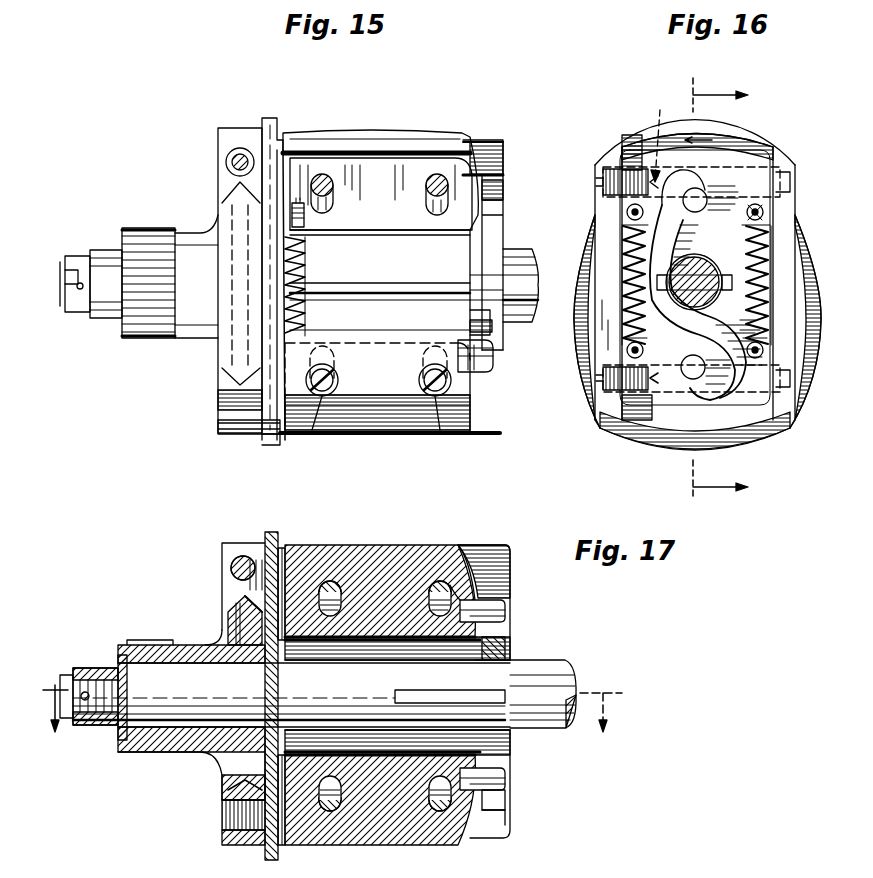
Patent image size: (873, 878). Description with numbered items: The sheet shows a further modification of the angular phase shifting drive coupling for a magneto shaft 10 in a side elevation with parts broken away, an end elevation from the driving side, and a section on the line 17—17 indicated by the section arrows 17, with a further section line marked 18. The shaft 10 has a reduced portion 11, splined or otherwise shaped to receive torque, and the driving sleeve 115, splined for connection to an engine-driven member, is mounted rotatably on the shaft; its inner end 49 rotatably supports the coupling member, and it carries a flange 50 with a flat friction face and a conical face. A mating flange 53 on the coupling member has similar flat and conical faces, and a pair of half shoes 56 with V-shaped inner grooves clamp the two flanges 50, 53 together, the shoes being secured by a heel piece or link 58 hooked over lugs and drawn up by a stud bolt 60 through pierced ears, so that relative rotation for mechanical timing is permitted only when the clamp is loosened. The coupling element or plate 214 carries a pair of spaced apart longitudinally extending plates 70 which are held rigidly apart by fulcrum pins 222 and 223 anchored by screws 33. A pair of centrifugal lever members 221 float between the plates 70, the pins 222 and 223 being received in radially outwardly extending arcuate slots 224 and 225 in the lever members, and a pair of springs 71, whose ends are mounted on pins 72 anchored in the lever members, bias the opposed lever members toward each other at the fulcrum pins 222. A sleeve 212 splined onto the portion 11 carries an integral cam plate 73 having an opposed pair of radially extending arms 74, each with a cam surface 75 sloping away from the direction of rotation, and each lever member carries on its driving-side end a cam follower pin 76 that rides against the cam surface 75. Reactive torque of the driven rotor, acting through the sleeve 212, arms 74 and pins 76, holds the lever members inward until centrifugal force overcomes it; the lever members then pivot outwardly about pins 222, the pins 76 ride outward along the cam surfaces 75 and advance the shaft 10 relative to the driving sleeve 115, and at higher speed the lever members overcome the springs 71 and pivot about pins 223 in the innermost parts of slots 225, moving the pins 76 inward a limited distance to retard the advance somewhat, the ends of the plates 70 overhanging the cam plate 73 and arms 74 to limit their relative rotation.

In FIG. 15, the shaft 10 is at (512, 250).
In FIG. 17, the shaft 10 is at (545, 668).
In FIG. 16, the reduced portion 11 is at (690, 305).
In FIG. 17, the reduced portion 11 is at (291, 693).
In FIG. 16, the bearing sleeve 17 is at (723, 291).
In FIG. 17, the thrust washer 18 is at (333, 720).
In FIG. 15, the screws 33 is at (308, 433).
In FIG. 16, the screws 33 is at (591, 176).
In FIG. 17, the inner end 49 is at (228, 768).
In FIG. 17, the flange 50 is at (232, 636).
In FIG. 17, the flange 53 is at (232, 600).
In FIG. 15, the half shoes 56 is at (218, 398).
In FIG. 17, the half shoes 56 is at (222, 815).
In FIG. 15, the heel piece or link 58 is at (240, 430).
In FIG. 17, the heel piece or link 58 is at (222, 840).
In FIG. 15, the stud bolt 60 is at (226, 150).
In FIG. 17, the stud bolt 60 is at (230, 562).
In FIG. 15, the plates 70 is at (486, 142).
In FIG. 16, the plates 70 is at (605, 410).
In FIG. 17, the plates 70 is at (490, 548).
In FIG. 15, the springs 71 is at (308, 250).
In FIG. 16, the springs 71 is at (625, 230).
In FIG. 15, the pins 72 is at (308, 222).
In FIG. 16, the pins 72 is at (625, 200).
In FIG. 15, the cam plate 73 is at (486, 282).
In FIG. 16, the cam plate 73 is at (725, 318).
In FIG. 17, the cam plate 73 is at (505, 645).
In FIG. 15, the arms 74 is at (500, 170).
In FIG. 16, the arms 74 is at (765, 358).
In FIG. 17, the arms 74 is at (518, 799).
In FIG. 16, the cam surface 75 is at (700, 190).
In FIG. 17, the cam surface 75 is at (505, 805).
In FIG. 15, the cam follower 76 is at (495, 358).
In FIG. 16, the cam follower 76 is at (705, 205).
In FIG. 17, the cam follower 76 is at (505, 612).
In FIG. 15, the sleeve 115 is at (185, 338).
In FIG. 17, the sleeve 115 is at (148, 752).
In FIG. 15, the sleeve 212 is at (380, 280).
In FIG. 17, the sleeve 212 is at (505, 742).
In FIG. 15, the coupling element or plate 214 is at (268, 118).
In FIG. 16, the coupling element or plate 214 is at (735, 140).
In FIG. 17, the coupling element or plate 214 is at (274, 532).
In FIG. 15, the centrifugal lever members 221 is at (358, 132).
In FIG. 16, the centrifugal lever members 221 is at (632, 150).
In FIG. 17, the centrifugal lever members 221 is at (380, 695).
In FIG. 15, the fulcrum pins 222 is at (333, 185).
In FIG. 17, the fulcrum pins 222 is at (332, 582).
In FIG. 15, the fulcrum pins 223 is at (430, 186).
In FIG. 16, the fulcrum pins 223 is at (654, 136).
In FIG. 17, the fulcrum pins 223 is at (444, 582).
In FIG. 15, the arcuate slots 224 is at (326, 202).
In FIG. 17, the arcuate slots 224 is at (372, 560).
In FIG. 15, the arcuate slots 225 is at (434, 205).
In FIG. 17, the arcuate slots 225 is at (470, 595).